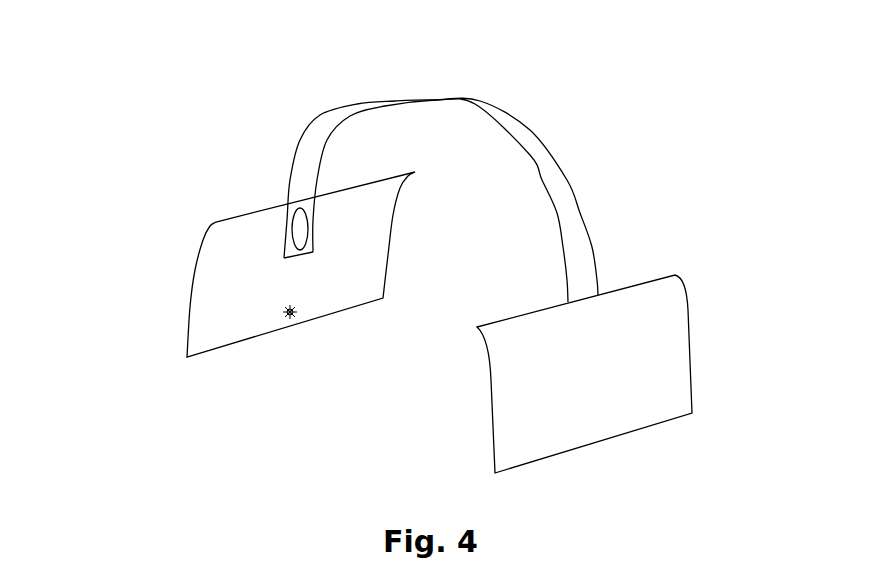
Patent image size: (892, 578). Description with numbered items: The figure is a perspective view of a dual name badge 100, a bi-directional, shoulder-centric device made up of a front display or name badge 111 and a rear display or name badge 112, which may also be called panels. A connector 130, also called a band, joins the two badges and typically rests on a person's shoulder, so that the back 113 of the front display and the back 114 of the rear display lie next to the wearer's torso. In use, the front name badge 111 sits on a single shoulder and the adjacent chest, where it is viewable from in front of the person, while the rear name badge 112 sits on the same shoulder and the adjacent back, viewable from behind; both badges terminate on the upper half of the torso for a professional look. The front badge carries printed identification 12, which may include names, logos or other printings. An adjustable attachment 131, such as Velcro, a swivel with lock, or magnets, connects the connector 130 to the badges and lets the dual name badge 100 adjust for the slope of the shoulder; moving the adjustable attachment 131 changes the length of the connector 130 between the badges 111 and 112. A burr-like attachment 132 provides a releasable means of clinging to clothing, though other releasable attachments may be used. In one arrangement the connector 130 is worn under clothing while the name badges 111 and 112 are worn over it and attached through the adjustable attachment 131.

The dual name badge 100 is at (287, 125).
The connector 130 is at (532, 145).
The adjustable attachment 131 is at (298, 226).
The rear display/name badge 112 is at (188, 288).
The back of rear display 114 is at (233, 305).
The burr-like attachment 132 is at (488, 377).
The front display/name badge 111 is at (632, 378).
The printed identification 12 is at (637, 333).
The back of front display 113 is at (492, 423).